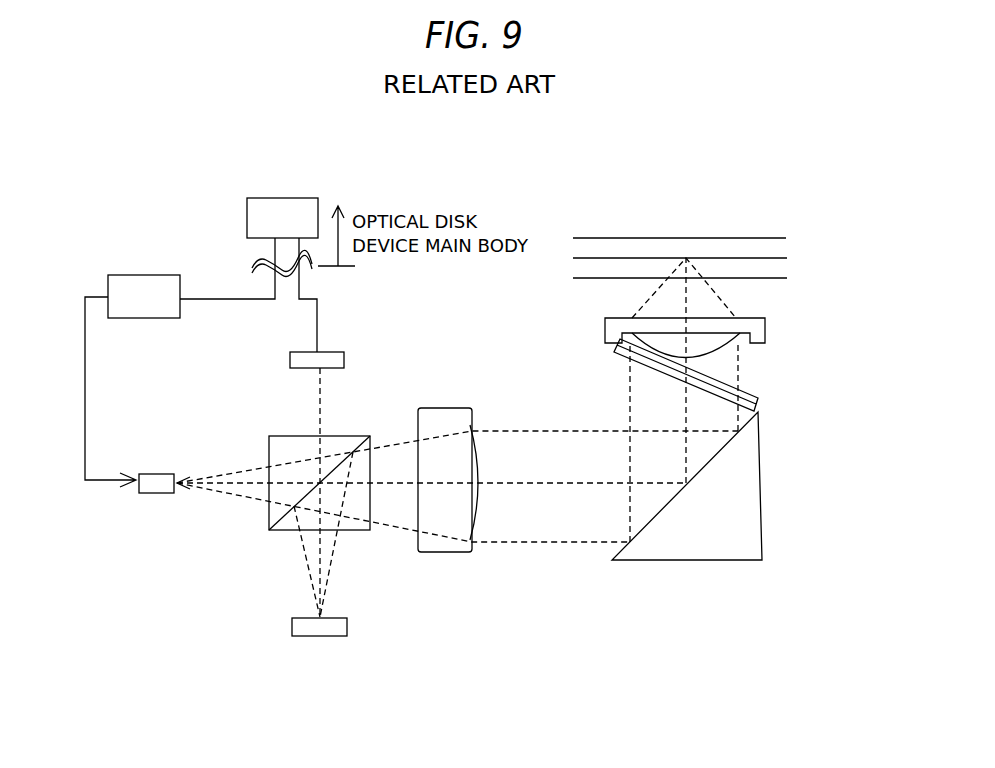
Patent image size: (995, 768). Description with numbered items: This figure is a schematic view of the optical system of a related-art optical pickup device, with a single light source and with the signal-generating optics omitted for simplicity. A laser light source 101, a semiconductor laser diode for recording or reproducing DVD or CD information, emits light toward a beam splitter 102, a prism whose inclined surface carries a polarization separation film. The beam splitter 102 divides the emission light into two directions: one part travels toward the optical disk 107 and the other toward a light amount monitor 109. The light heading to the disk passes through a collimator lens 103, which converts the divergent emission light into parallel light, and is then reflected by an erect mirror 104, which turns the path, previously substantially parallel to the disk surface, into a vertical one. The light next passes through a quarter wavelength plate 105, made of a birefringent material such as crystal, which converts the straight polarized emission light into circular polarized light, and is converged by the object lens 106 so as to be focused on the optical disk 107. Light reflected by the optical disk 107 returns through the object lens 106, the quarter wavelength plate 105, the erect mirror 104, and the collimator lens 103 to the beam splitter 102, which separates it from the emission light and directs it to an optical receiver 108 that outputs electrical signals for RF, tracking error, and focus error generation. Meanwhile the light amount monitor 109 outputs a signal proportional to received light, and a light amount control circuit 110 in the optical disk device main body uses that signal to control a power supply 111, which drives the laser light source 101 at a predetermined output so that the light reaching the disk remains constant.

The laser light source 101 is at (155, 493).
The beam splitter 102 is at (269, 528).
The collimator lens 103 is at (448, 552).
The erect mirror 104 is at (685, 560).
The quarter wavelength plate 105 is at (757, 408).
The object lens 106 is at (750, 350).
The optical disk 107 is at (723, 238).
The optical receiver 108 is at (347, 627).
The light amount monitor 109 is at (322, 350).
The light amount control circuit 110 is at (283, 198).
The power supply 111 is at (140, 275).